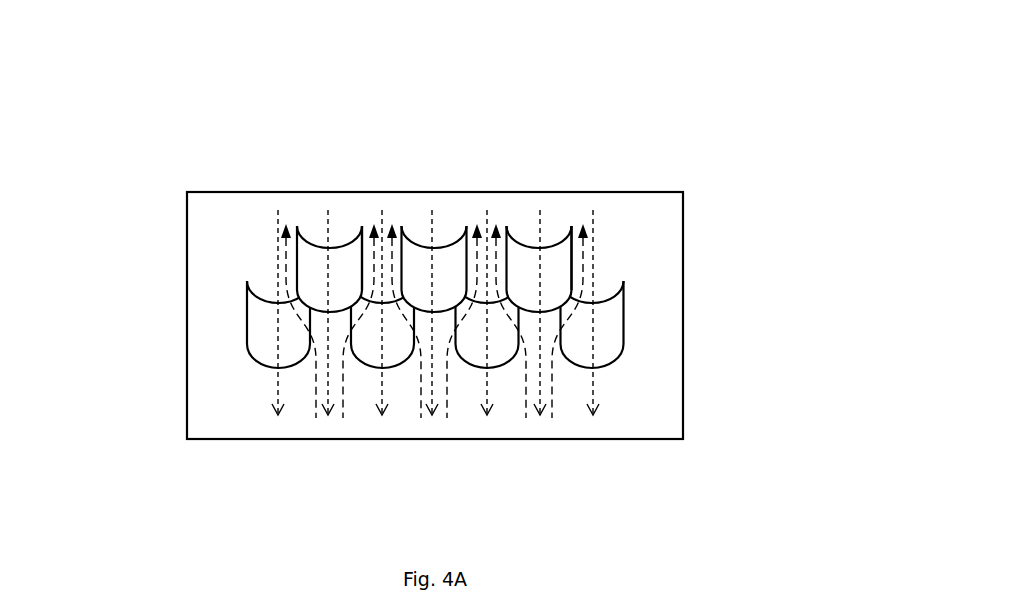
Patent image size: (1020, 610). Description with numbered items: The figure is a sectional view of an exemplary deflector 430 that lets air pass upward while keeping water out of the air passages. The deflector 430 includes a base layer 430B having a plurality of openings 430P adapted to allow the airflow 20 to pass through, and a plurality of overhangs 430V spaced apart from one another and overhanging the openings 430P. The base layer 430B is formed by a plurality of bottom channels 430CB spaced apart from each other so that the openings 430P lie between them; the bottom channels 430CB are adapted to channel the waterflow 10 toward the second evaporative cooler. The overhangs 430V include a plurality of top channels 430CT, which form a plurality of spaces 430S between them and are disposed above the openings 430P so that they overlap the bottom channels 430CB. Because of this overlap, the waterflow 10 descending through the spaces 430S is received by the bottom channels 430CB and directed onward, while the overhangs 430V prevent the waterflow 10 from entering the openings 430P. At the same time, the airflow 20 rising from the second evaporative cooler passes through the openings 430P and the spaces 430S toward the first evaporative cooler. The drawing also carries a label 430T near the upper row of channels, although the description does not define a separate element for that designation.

The deflector 430 is at (430, 198).
The top channel 430T is at (297, 213).
The spaces 430S is at (362, 228).
The top channels 430CT is at (522, 242).
The overhangs 430V is at (568, 242).
The waterflow 10 is at (596, 237).
The bottom channels 430CB is at (250, 345).
The base layer 430B is at (647, 318).
The openings 430P is at (552, 342).
The airflow 20 is at (553, 413).